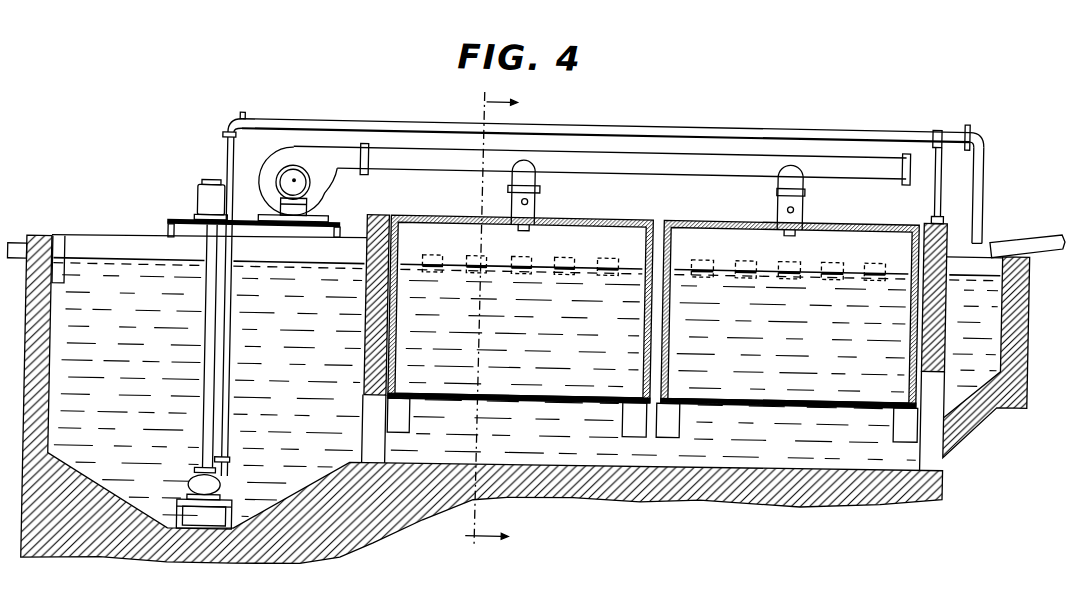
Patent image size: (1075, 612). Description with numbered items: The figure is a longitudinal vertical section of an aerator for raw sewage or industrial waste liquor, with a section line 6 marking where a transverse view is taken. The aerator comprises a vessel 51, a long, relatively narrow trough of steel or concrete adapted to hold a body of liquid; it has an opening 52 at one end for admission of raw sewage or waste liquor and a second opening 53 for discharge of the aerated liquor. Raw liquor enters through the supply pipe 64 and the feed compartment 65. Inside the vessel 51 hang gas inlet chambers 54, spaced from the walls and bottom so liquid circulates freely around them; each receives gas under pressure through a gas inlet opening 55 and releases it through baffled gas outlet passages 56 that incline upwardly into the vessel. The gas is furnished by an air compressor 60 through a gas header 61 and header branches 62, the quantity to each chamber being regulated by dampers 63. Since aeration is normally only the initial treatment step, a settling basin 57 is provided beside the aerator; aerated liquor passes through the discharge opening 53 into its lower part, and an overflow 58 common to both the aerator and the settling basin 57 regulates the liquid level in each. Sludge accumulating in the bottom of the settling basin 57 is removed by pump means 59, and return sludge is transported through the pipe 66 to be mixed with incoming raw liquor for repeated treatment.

The section line 6- 6 is at (485, 324).
The vessel 51 is at (377, 219).
The opening 52 is at (940, 394).
The second opening 53 is at (364, 441).
The gas inlet chamber 54 is at (673, 218).
The gas inlet opening 55 is at (524, 226).
The baffled gas outlet passage 56 is at (615, 252).
The settling basin 57 is at (50, 314).
The overflow 58 is at (41, 244).
The pump means 59 is at (219, 493).
The air compressor 60 is at (323, 194).
The gas header 61 is at (654, 170).
The header branch 62 is at (533, 213).
The damper 63 is at (519, 203).
The supply pipe 64 is at (1055, 228).
The feed compartment 65 is at (992, 309).
The pipe 66 is at (980, 180).